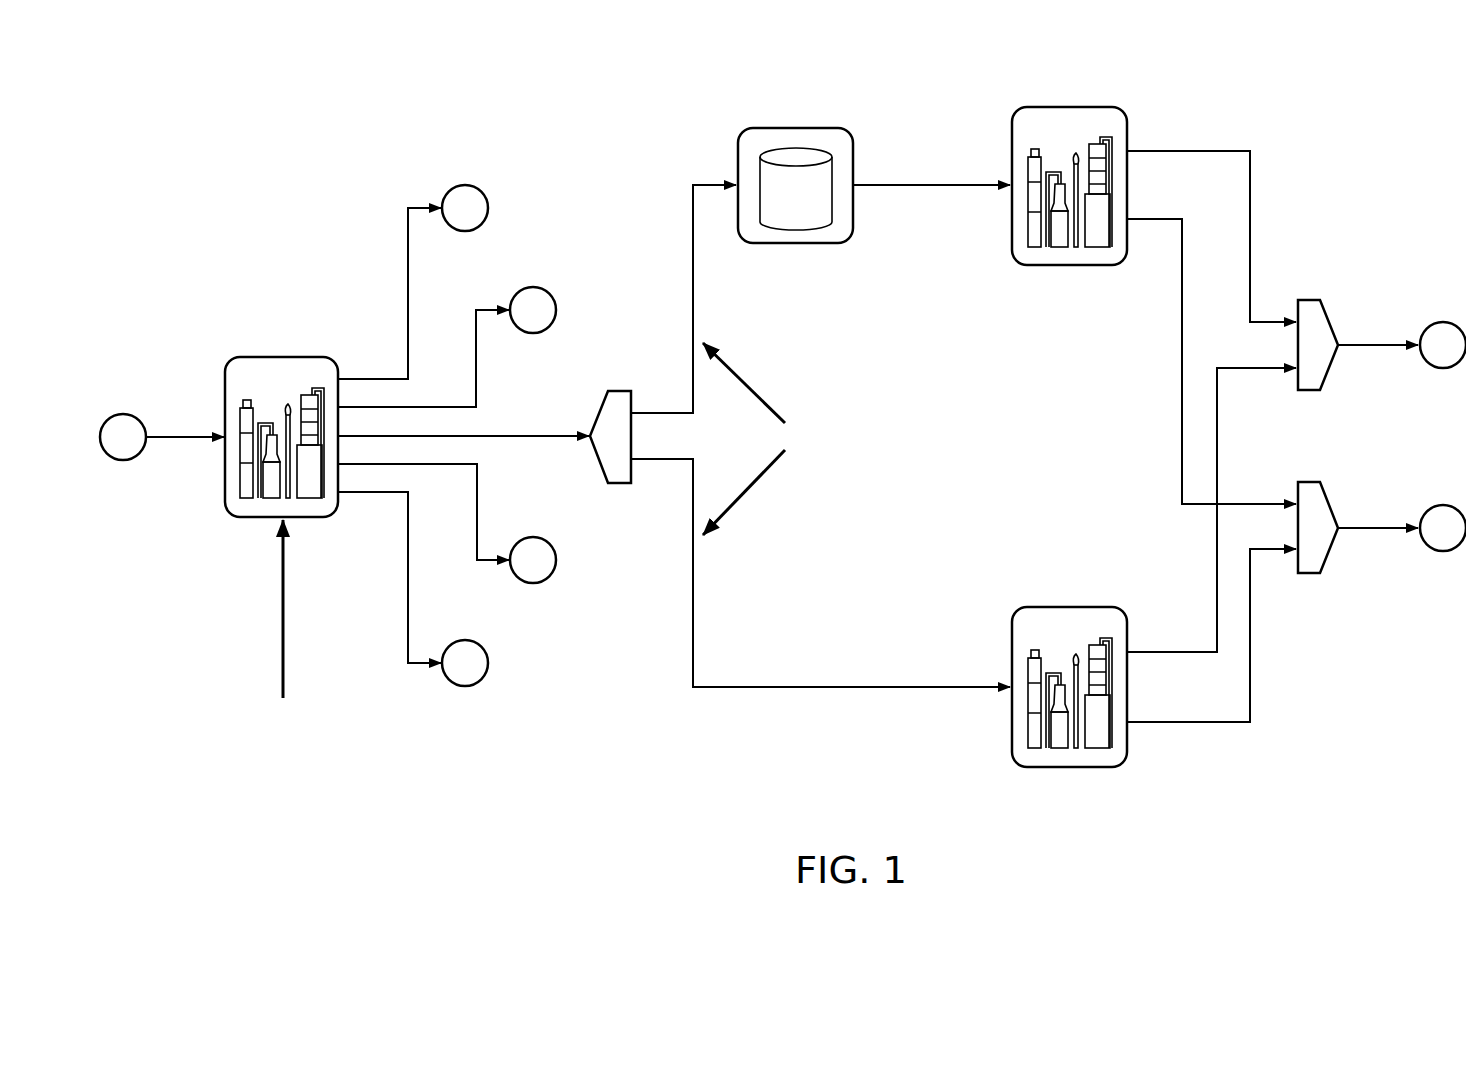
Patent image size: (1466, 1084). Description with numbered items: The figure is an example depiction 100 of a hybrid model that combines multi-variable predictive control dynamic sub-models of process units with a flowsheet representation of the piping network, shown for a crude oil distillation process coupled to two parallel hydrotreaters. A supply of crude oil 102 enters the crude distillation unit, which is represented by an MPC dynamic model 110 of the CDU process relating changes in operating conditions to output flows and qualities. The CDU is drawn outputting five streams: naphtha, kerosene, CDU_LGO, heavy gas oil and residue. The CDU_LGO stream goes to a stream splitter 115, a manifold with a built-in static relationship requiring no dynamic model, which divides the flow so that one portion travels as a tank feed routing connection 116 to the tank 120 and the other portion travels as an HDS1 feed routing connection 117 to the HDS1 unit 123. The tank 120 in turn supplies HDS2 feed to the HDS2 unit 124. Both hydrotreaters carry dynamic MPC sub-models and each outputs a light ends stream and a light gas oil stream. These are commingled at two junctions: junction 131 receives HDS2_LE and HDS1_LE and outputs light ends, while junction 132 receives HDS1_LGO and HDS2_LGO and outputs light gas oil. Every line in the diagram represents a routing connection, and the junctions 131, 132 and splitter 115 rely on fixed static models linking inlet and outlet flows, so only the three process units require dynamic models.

The depiction of combined multi-variable predictive control and flowsheet model 100 is at (245, 113).
The crude oil 102 is at (181, 440).
The MPC dynamic model of the CDU process unit 110 is at (278, 675).
The stream splitter 115 is at (598, 462).
The tank feed routing connection 116 is at (710, 183).
The HDS1_feed routing connection 117 is at (853, 689).
The tank 120 is at (797, 127).
The HDS1 unit 123 is at (1068, 770).
The HDS2 unit 124 is at (1070, 267).
The junction 131 is at (1333, 360).
The junction 132 is at (1333, 543).